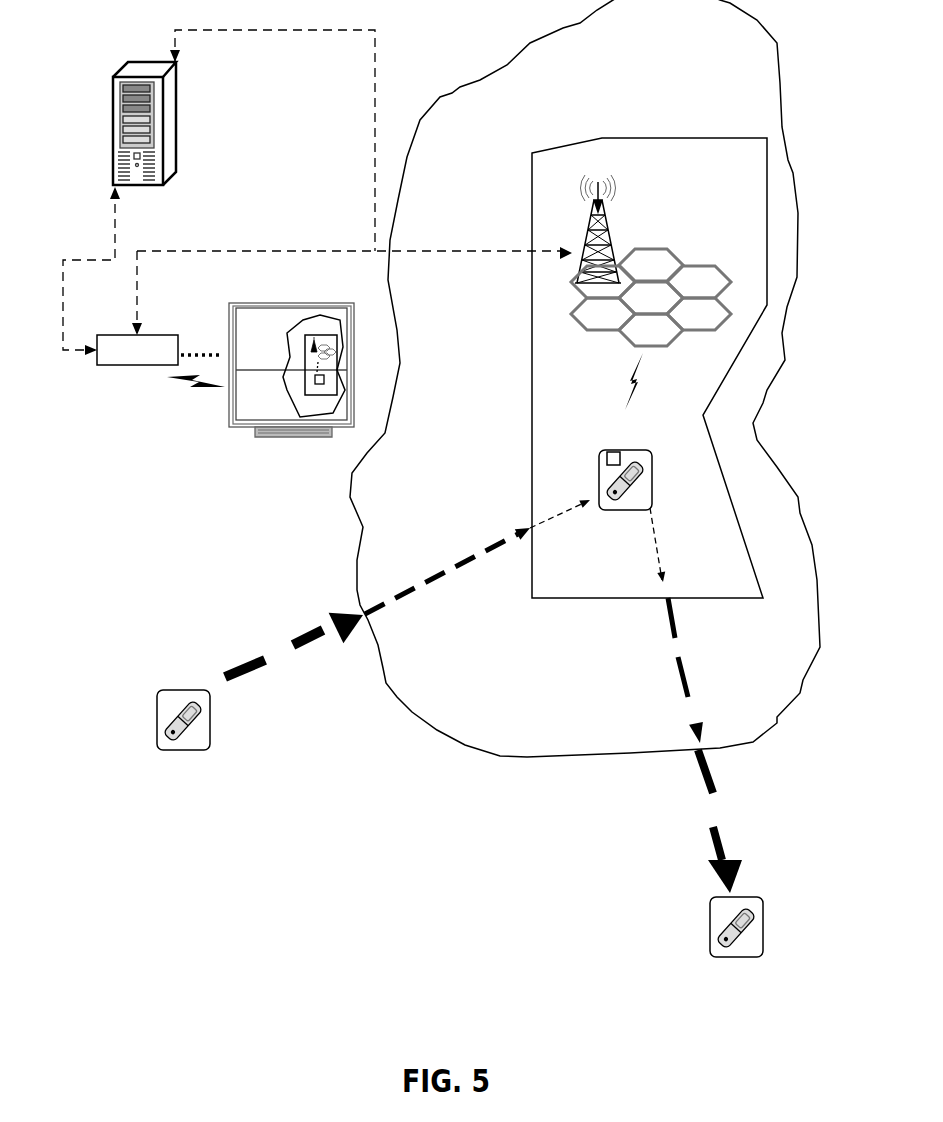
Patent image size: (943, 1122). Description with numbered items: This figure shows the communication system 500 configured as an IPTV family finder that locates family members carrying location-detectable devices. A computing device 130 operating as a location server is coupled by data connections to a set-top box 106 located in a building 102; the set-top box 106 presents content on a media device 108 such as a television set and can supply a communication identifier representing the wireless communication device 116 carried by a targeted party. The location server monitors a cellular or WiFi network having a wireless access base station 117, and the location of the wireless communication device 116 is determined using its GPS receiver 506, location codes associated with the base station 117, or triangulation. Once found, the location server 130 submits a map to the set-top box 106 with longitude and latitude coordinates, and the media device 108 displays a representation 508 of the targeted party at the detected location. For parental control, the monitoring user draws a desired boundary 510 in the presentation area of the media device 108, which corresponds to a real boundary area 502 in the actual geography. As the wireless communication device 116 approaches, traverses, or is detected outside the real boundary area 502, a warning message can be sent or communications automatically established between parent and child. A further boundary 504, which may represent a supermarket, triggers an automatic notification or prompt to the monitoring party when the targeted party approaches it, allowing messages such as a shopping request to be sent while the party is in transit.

The communication system 500 is at (472, 1057).
The computing device 130 is at (148, 72).
The set-top box 106 is at (176, 364).
The building 102 is at (190, 447).
The media device 108 is at (282, 346).
The desired boundary 510 is at (278, 402).
The representation of the targeted party 508 is at (320, 400).
The real boundary area 502 is at (500, 757).
The boundary 504 is at (637, 592).
The wireless access base station 117 is at (665, 255).
The wireless communication device 116 is at (627, 510).
The GPS receiver 506 is at (607, 452).